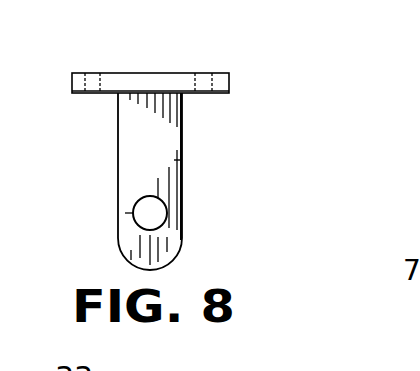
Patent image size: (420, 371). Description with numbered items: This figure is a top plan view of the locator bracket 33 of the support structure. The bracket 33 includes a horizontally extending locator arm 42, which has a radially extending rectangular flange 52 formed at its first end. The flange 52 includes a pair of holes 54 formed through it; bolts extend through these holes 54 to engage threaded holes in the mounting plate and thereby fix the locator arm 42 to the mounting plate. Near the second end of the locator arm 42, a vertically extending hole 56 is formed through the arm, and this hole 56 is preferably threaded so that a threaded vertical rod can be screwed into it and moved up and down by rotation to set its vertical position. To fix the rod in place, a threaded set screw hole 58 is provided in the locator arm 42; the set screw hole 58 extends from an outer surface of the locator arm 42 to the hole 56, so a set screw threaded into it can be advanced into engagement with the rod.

The rectangular flange 52 is at (143, 86).
The holes 54 is at (87, 80).
The bracket 33 is at (131, 139).
The locator arm 42 is at (178, 162).
The hole 56 is at (165, 208).
The set screw hole 58 is at (134, 213).